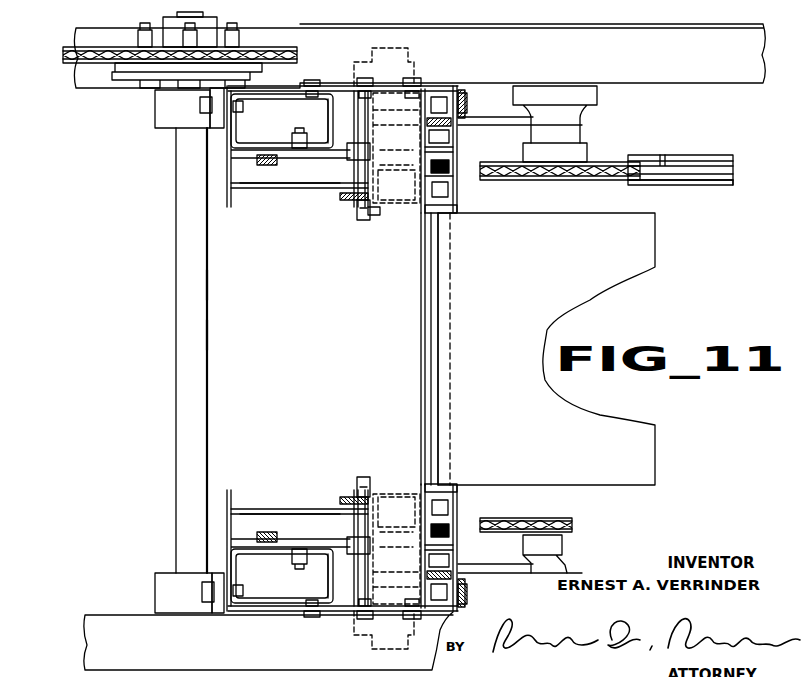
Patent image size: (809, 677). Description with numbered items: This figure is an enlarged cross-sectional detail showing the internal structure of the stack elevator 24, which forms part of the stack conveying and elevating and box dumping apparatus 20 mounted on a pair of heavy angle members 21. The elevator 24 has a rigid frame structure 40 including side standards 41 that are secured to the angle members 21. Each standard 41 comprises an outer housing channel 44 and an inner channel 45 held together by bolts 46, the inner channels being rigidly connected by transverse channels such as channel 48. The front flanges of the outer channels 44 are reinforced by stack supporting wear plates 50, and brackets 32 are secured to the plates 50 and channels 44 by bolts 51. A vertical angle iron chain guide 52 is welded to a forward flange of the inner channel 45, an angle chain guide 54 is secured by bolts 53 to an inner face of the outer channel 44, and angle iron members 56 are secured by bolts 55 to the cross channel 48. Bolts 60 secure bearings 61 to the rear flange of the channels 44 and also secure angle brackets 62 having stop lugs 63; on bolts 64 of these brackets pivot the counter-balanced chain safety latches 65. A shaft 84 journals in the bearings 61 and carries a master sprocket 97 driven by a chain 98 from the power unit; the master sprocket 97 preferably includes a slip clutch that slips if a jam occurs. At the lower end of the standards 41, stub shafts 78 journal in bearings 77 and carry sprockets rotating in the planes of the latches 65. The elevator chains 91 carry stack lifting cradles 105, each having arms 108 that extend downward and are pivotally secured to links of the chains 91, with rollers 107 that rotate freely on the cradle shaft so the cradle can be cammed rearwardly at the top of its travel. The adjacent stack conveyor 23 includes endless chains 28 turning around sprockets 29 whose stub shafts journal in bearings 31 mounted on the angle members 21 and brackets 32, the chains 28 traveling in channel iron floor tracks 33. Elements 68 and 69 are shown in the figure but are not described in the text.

The stack conveying and elevating and box dumping apparatus 20 is at (165, 283).
The angle members 21 is at (693, 68).
The stack conveyor 23 is at (697, 187).
The stack elevator 24 is at (463, 202).
The endless chains 28 is at (648, 158).
The sprockets 29 is at (577, 155).
The bearings 31 is at (600, 106).
The brackets 32 is at (472, 127).
The channel iron floor tracks 33 is at (713, 155).
The rigid frame structure 40 is at (250, 333).
The side standards 41 is at (333, 84).
The outer housing channel 44 is at (226, 182).
The inner channel 45 is at (462, 104).
The bolts 46 is at (412, 86).
The transverse channel 48 is at (405, 328).
The stack supporting wear plates 50 is at (450, 215).
The bolts 51 is at (470, 100).
The vertical angle iron chain guide 52 is at (436, 122).
The bolts 53 is at (308, 92).
The angle chain guide 54 is at (328, 125).
The bolts 55 is at (357, 208).
The angle iron members 56 is at (367, 222).
The bolts 60 is at (205, 110).
The bearings 61 is at (168, 115).
The angle brackets 62 is at (237, 125).
The stop lugs 63 is at (248, 165).
The bolts 64 is at (290, 140).
The counter-balanced chain safety latches 65 is at (325, 163).
The lower flange 68 is at (255, 200).
The bearing plate 69 is at (291, 186).
The bearings 77 is at (440, 70).
The stub shafts 78 is at (410, 168).
The shaft 84 is at (190, 247).
The elevator chains 91 is at (458, 184).
The master sprocket 97 is at (143, 42).
The chain 98 is at (83, 47).
The stack lifting cradles 105 is at (628, 252).
The rollers 107 is at (372, 216).
The arms 108 is at (447, 167).